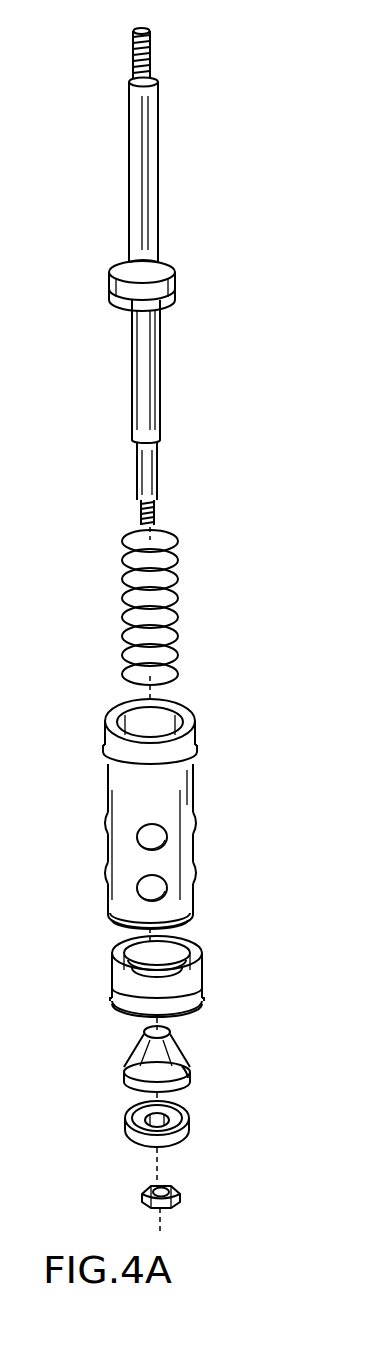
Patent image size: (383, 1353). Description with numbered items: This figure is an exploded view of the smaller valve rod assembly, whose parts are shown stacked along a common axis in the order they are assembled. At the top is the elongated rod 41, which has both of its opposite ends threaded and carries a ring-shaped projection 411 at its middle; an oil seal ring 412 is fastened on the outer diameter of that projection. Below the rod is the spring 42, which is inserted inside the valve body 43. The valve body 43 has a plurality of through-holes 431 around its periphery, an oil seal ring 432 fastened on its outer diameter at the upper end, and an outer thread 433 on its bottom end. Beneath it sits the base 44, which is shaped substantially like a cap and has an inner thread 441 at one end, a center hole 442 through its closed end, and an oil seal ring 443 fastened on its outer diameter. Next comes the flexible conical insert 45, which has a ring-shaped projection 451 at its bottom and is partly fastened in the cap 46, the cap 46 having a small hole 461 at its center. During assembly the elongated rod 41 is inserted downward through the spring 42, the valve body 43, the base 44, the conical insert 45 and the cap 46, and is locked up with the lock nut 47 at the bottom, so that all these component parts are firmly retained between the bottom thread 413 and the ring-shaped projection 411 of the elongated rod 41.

The elongated rod 41 is at (136, 157).
The ring-shaped projection 411 is at (165, 263).
The oil seal ring 412 is at (108, 286).
The bottom thread 413 is at (158, 505).
The spring 42 is at (122, 593).
The valve body 43 is at (108, 783).
The through-holes 431 is at (160, 834).
The oil seal ring 432 is at (198, 746).
The outer thread 433 is at (192, 916).
The base 44 is at (112, 966).
The inner thread 441 is at (188, 942).
The center hole 442 is at (197, 972).
The oil seal ring 443 is at (194, 999).
The flexible conical insert 45 is at (148, 1063).
The ring-shaped projection 451 is at (184, 1073).
The cap 46 is at (125, 1126).
The small hole 461 is at (170, 1124).
The lock nut 47 is at (143, 1193).